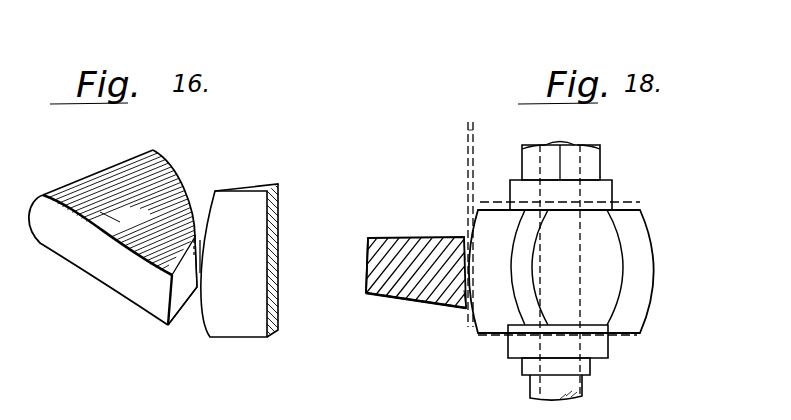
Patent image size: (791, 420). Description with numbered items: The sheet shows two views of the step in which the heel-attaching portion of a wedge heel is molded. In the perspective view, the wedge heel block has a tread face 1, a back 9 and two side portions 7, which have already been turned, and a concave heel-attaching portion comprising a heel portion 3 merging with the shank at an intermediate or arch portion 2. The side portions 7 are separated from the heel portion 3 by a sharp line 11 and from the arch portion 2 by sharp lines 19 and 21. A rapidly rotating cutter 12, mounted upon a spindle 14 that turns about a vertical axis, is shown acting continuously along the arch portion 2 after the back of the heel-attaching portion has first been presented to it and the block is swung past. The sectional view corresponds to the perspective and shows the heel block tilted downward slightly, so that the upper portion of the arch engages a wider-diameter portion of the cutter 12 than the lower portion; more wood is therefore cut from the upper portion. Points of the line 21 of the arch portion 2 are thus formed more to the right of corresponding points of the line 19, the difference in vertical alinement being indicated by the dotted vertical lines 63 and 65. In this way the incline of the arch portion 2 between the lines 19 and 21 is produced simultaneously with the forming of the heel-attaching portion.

In FIG. 16, the tread face 1 is at (117, 267).
In FIG. 18, the tread face 1 is at (368, 266).
In FIG. 18, the intermediate or arch portion 2 is at (440, 305).
In FIG. 16, the heel portion 3 is at (180, 293).
In FIG. 16, the side portions 7 is at (127, 211).
In FIG. 18, the side portions 7 is at (405, 237).
In FIG. 16, the back 9 is at (88, 173).
In FIG. 16, the sharp line 11 is at (177, 170).
In FIG. 16, the cutter 12 is at (245, 262).
In FIG. 18, the cutter 12 is at (638, 267).
In FIG. 18, the spindle 14 is at (578, 393).
In FIG. 16, the sharp line 19 is at (194, 237).
In FIG. 18, the sharp line 19 is at (465, 237).
In FIG. 18, the sharp line 21 is at (465, 312).
In FIG. 18, the dotted vertical line 63 is at (467, 138).
In FIG. 18, the dotted vertical line 65 is at (473, 137).